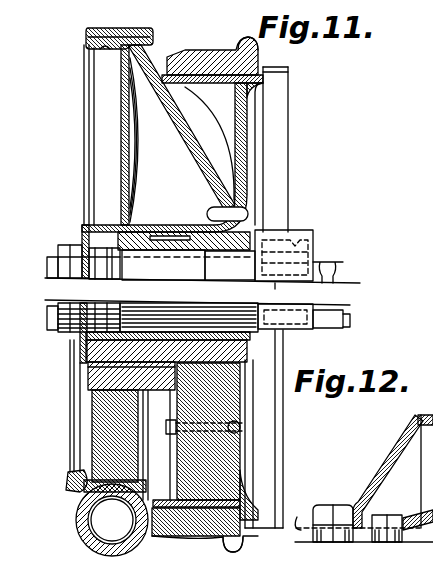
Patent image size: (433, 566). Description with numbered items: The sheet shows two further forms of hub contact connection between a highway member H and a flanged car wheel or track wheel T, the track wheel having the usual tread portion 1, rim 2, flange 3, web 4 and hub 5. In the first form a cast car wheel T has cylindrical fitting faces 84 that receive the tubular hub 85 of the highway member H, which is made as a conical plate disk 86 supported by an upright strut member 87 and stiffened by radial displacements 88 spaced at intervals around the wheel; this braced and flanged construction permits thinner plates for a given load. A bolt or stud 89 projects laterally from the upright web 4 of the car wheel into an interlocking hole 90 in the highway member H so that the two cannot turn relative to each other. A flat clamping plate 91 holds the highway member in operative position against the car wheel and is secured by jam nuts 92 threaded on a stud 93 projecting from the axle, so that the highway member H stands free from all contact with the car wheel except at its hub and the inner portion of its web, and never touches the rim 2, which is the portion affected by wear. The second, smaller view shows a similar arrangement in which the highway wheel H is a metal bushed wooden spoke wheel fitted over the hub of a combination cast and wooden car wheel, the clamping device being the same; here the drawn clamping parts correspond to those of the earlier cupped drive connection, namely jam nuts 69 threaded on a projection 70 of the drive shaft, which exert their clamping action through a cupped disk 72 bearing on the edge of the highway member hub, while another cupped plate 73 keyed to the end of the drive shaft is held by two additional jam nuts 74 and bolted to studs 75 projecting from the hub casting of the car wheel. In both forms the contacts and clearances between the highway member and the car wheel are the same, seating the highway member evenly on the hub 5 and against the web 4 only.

In FIG. 11, the tread portion 1 is at (213, 565).
In FIG. 11, the rim 2 is at (176, 58).
In FIG. 11, the flange 3 is at (262, 43).
In FIG. 11, the web 4 is at (243, 130).
In FIG. 11, the hub 5 is at (148, 228).
In FIG. 11, the highway member H is at (143, 32).
In FIG. 11, the track wheel T is at (295, 166).
In FIG. 11, the cylindrical fitting faces 84 is at (243, 229).
In FIG. 11, the tubular hub 85 is at (175, 231).
In FIG. 11, the conical plate disk 86 is at (112, 24).
In FIG. 11, the upright strut member 87 is at (121, 131).
In FIG. 11, the radial displacements 88 is at (126, 109).
In FIG. 11, the bolt or stud 89 is at (228, 217).
In FIG. 11, the interlocking hole 90 is at (229, 206).
In FIG. 11, the flat clamping plate 91 is at (83, 218).
In FIG. 11, the jam nuts 92 is at (64, 244).
In FIG. 11, the stud 93 is at (48, 268).
In FIG. 12, the jam nuts 69 is at (344, 506).
In FIG. 12, the projection 70 is at (298, 515).
In FIG. 12, the cupped disk 72 is at (402, 456).
In FIG. 12, the cupped plate 73 is at (416, 518).
In FIG. 12, the additional jam nuts 74 is at (378, 516).
In FIG. 12, the studs 75 is at (410, 430).